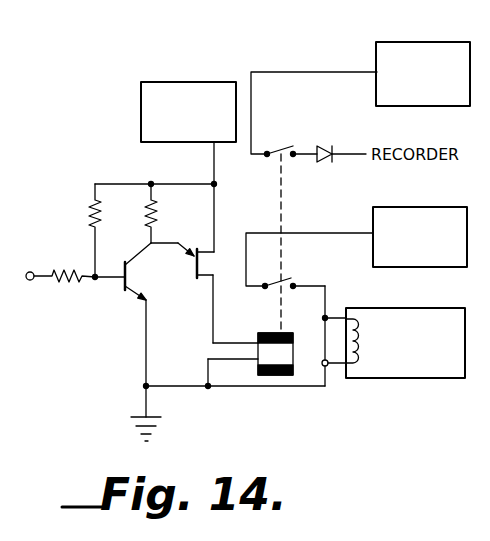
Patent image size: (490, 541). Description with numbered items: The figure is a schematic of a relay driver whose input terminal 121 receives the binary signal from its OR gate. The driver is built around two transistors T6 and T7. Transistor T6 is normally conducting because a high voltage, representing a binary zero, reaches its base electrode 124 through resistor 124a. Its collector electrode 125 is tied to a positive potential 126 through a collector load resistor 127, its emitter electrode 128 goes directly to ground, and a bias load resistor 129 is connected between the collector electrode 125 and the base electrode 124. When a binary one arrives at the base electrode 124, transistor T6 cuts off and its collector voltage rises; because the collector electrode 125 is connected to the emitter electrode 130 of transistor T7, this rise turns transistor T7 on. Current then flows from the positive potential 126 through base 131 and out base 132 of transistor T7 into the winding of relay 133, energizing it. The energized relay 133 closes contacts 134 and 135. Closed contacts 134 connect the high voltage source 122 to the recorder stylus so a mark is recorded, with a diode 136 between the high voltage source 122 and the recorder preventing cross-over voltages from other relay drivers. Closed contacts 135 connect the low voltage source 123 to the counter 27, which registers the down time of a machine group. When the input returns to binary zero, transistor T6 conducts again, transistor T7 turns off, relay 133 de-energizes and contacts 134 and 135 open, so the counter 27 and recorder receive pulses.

The input terminal 121 is at (28, 279).
The high voltage source 122 is at (401, 42).
The low voltage source 123 is at (397, 207).
The base electrode 124 is at (100, 277).
The resistor 124a is at (70, 268).
The collector electrode 125 is at (134, 256).
The positive potential 126 is at (141, 120).
The collector load resistor 127 is at (158, 206).
The emitter electrode 128 is at (145, 302).
The bias load resistor 129 is at (92, 212).
The emitter electrode 130 is at (183, 249).
The base 131 is at (213, 255).
The base 132 is at (213, 274).
The relay 133 is at (283, 376).
The contacts 134 is at (283, 148).
The contacts 135 is at (280, 282).
The diode 136 is at (323, 148).
The counter 27 is at (386, 308).
The transistor T6 is at (127, 287).
The transistor T7 is at (206, 277).